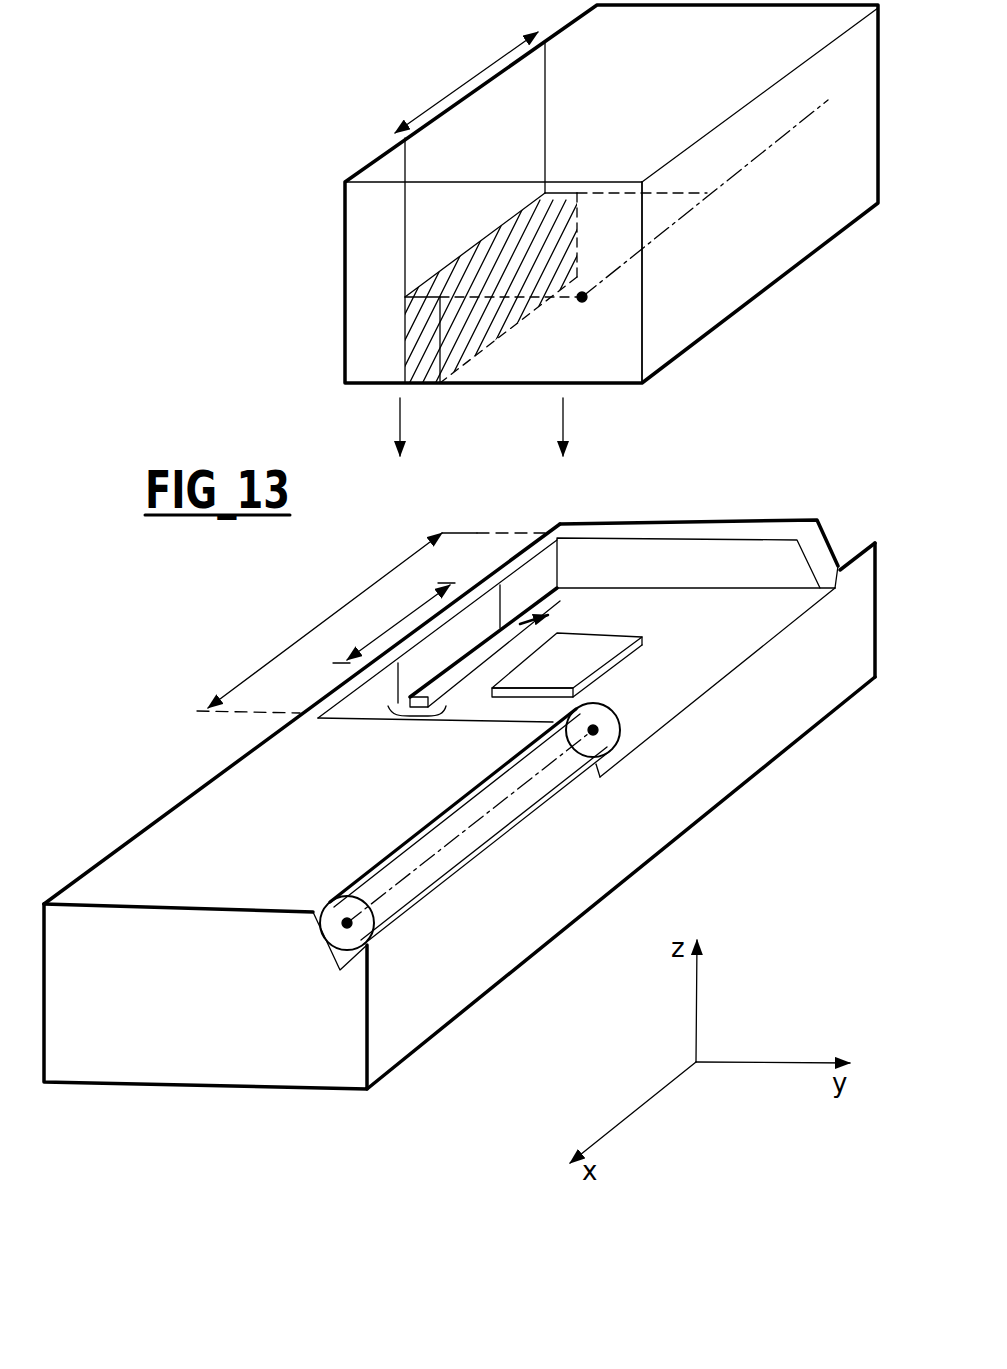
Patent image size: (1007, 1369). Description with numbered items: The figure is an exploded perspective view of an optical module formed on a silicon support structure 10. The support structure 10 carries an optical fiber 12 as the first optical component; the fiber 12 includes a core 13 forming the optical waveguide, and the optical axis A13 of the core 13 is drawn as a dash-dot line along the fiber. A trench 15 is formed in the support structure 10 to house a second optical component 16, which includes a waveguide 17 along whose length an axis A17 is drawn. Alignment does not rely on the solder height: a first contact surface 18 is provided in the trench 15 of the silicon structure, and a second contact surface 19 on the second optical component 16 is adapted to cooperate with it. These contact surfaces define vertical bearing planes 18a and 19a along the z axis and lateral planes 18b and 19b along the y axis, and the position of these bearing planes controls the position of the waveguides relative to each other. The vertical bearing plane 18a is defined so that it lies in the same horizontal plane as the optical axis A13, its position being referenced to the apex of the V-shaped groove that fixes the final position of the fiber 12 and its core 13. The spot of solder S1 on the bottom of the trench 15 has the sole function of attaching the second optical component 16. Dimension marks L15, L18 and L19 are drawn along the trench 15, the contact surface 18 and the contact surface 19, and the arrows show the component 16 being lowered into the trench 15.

The Si support structure 10 is at (60, 1062).
The optical fiber 12 is at (437, 877).
The core 13 is at (347, 923).
The trench 15 is at (749, 640).
The second optical component 16 is at (762, 277).
The waveguide 17 is at (582, 297).
The first contact surface 18 is at (410, 720).
The vertical bearing plane 18a is at (550, 616).
The lateral plane 18b is at (504, 604).
The second contact surface 19 is at (424, 89).
The vertical bearing plane 19a is at (478, 306).
The lateral plane 19b is at (475, 101).
The optical axis A13 is at (497, 810).
The cover axis A17 is at (795, 130).
The spot of solder S1 is at (567, 665).
The length of platform L15 is at (371, 623).
The length of blade L18 is at (394, 623).
The length of cover L19 is at (466, 82).